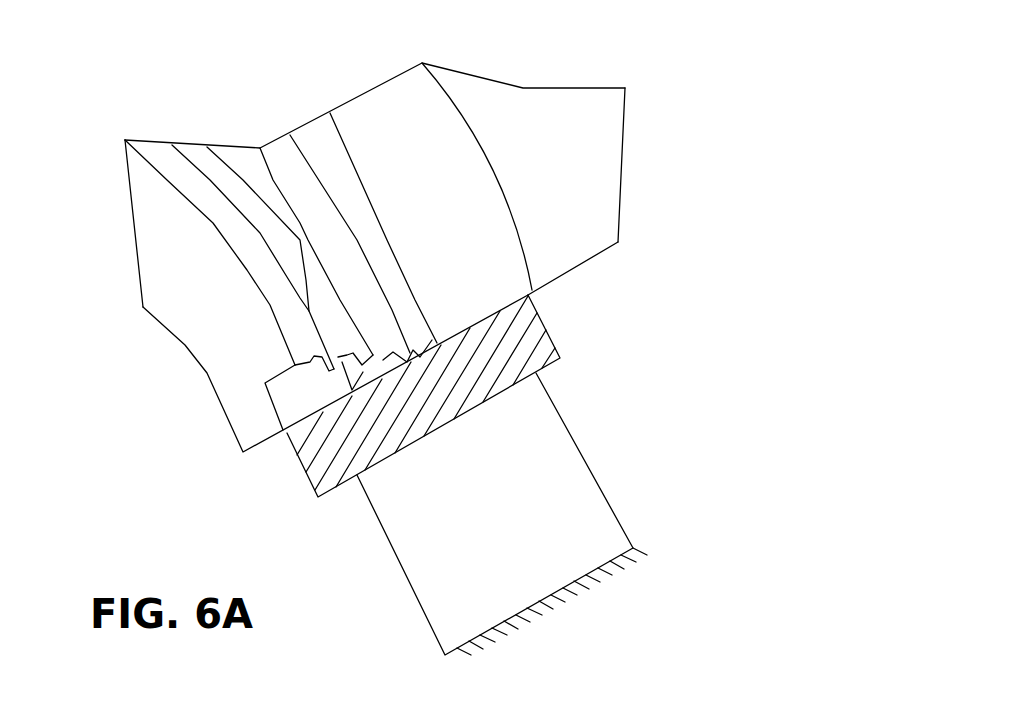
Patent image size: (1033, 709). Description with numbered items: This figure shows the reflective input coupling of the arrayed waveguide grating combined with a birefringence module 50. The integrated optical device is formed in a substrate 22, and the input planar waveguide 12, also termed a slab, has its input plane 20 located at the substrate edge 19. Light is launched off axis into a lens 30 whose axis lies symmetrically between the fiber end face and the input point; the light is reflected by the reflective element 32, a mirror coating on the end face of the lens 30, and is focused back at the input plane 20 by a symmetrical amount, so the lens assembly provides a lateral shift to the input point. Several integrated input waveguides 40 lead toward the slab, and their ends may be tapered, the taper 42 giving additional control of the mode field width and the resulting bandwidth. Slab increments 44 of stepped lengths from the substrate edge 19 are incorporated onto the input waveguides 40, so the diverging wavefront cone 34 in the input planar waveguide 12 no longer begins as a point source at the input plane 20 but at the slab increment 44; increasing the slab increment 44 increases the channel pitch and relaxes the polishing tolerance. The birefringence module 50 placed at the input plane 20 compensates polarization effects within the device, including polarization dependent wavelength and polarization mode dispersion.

The input planar waveguide 12 is at (448, 218).
The substrate 22 is at (554, 142).
The substrate edge 19 is at (598, 255).
The diverging cone 34 is at (313, 150).
The input waveguides 40 is at (193, 207).
The taper 42 is at (282, 338).
The slab increment 44 is at (277, 405).
The input plane 20 is at (258, 443).
The birefringence module 50 is at (513, 348).
The lens 30 is at (552, 452).
The reflective element 32 is at (648, 557).